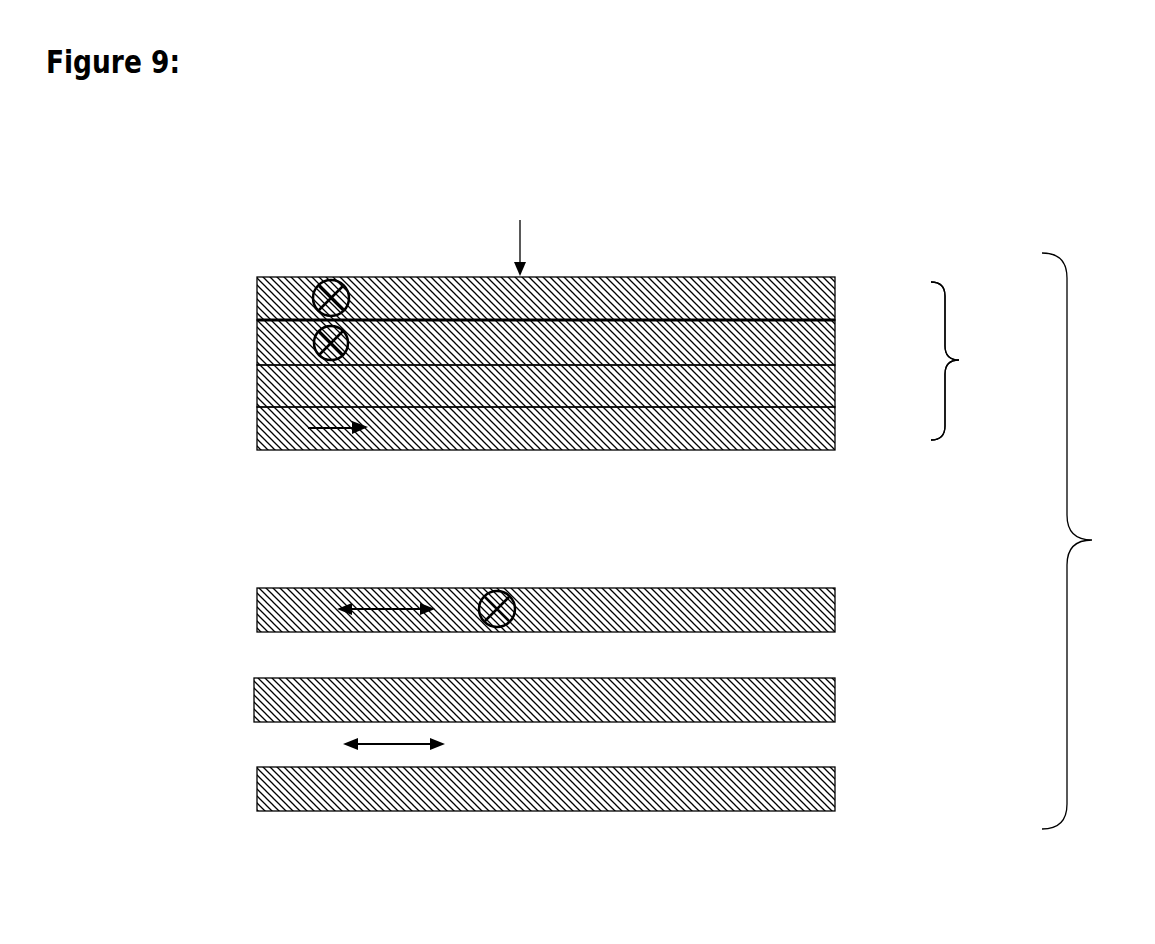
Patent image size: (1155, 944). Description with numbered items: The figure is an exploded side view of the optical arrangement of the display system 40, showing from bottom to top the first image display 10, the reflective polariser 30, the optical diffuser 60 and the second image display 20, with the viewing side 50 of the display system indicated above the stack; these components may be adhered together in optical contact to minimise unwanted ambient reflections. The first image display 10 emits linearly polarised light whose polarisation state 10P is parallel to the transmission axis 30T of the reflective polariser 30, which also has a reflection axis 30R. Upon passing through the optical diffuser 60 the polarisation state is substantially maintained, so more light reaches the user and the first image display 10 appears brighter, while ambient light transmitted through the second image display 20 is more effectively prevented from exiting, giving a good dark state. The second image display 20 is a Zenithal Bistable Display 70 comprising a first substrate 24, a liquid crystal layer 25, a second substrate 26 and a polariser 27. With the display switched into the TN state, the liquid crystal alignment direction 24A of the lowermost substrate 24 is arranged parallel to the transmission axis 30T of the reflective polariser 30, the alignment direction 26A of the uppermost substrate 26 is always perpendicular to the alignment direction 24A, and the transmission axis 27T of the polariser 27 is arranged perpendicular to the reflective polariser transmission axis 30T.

The first image display 10 is at (812, 790).
The polarisation state of light exiting the first image display 10P is at (393, 745).
The second image display 20 is at (966, 361).
The Zenithal Bistable Display (ZBD) 70 is at (983, 361).
The first substrate of the second image display 24 is at (814, 430).
The LC alignment direction of first substrate of the second image display 24A is at (325, 429).
The liquid crystal layer of the second image display 25 is at (816, 388).
The second substrate of the second image display 26 is at (816, 344).
The LC alignment direction of second substrate of the second image display 26A is at (314, 343).
The polariser element of the second image display 27 is at (816, 300).
The transmission axis of polariser 27T is at (313, 298).
The reflective polariser 30 is at (815, 610).
The reflection axis of reflective polariser 30R is at (482, 598).
The transmission axis of reflective polariser 30T is at (378, 610).
The display system 40 is at (1085, 541).
The viewing side of display system 50 is at (521, 234).
The optical diffuser 60 is at (813, 701).